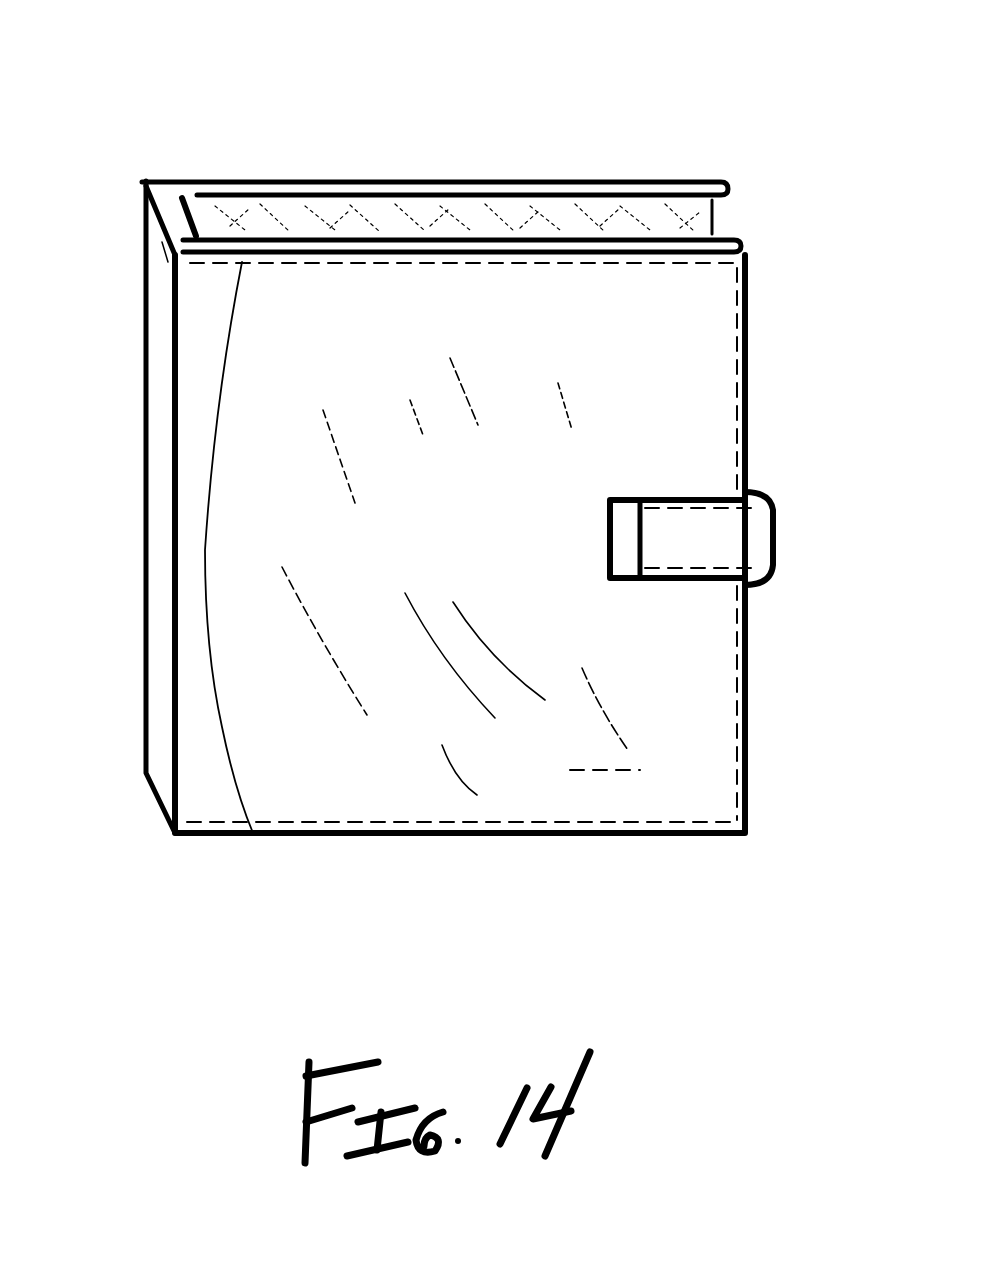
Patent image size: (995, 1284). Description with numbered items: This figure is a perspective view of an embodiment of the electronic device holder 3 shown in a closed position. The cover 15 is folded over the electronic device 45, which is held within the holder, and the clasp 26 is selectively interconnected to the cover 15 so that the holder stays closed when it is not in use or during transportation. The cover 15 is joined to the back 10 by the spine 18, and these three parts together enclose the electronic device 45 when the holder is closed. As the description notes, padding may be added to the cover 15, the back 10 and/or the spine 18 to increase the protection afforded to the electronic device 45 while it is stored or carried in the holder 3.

The carrying case 3 is at (243, 118).
The back 10 is at (658, 190).
The electronic device 45 is at (713, 208).
The spine 18 is at (157, 557).
The cover 15 is at (663, 806).
The clasp 26 is at (755, 532).